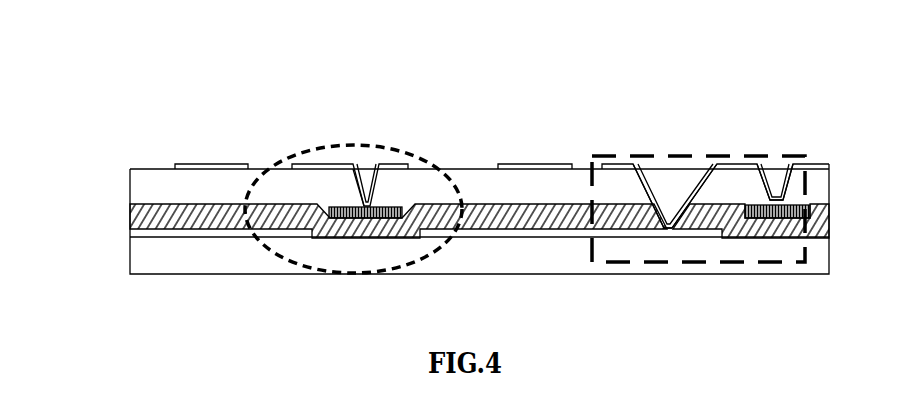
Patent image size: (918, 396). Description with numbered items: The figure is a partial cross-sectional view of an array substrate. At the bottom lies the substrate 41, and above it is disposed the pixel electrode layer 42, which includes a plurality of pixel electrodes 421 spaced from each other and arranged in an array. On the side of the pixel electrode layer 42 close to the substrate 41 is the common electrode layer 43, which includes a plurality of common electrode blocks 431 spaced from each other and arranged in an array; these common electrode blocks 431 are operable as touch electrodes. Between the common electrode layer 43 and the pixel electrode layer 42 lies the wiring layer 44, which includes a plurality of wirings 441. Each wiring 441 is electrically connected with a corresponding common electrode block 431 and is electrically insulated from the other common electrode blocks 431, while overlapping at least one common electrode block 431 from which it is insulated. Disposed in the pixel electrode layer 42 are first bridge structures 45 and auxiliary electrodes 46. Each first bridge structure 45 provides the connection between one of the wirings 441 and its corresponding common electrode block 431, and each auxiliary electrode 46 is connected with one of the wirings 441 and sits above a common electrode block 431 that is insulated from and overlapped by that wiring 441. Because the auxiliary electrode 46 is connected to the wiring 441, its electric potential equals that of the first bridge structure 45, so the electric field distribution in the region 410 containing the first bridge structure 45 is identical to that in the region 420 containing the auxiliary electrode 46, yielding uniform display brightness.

The substrate 41 is at (142, 257).
The pixel electrode layer 42 is at (217, 167).
The pixel electrodes 421 is at (468, 183).
The common electrode layer 43 is at (240, 232).
The common electrode blocks 431 is at (478, 256).
The wiring layer 44 is at (366, 225).
The wirings 441 is at (536, 256).
The first bridge structures 45 is at (802, 163).
The auxiliary electrodes 46 is at (325, 177).
The region with the first bridge structure 410 is at (607, 156).
The region with the auxiliary electrode 420 is at (373, 147).